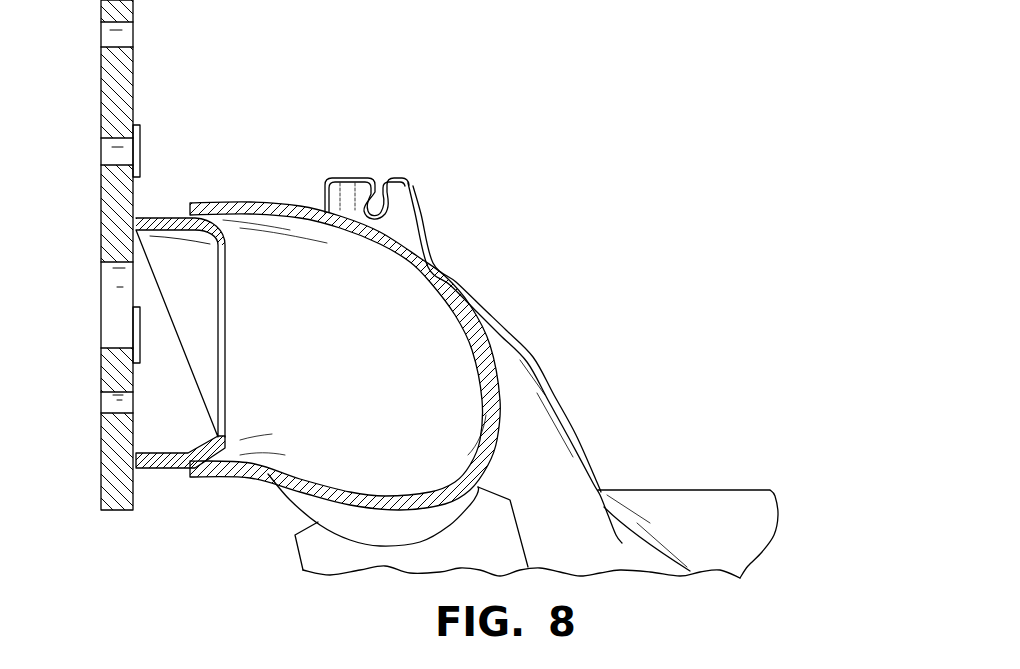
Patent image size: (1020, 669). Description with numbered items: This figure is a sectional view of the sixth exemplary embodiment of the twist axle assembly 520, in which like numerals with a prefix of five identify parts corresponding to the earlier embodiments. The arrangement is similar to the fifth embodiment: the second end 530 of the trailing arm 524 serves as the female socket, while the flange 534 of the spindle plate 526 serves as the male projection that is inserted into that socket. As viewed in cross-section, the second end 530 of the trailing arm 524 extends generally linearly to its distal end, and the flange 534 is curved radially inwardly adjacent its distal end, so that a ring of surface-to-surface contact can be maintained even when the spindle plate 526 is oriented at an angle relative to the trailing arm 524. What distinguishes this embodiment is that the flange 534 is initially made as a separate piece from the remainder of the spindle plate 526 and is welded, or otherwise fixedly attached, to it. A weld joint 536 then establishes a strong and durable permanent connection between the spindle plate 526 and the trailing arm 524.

The twist axle assembly 520 is at (496, 257).
The trailing arm 524 is at (559, 405).
The spindle plate 526 is at (137, 87).
The second end of the trailing arm 530 is at (224, 479).
The flange 534 is at (157, 468).
The weld joint 536 is at (137, 216).